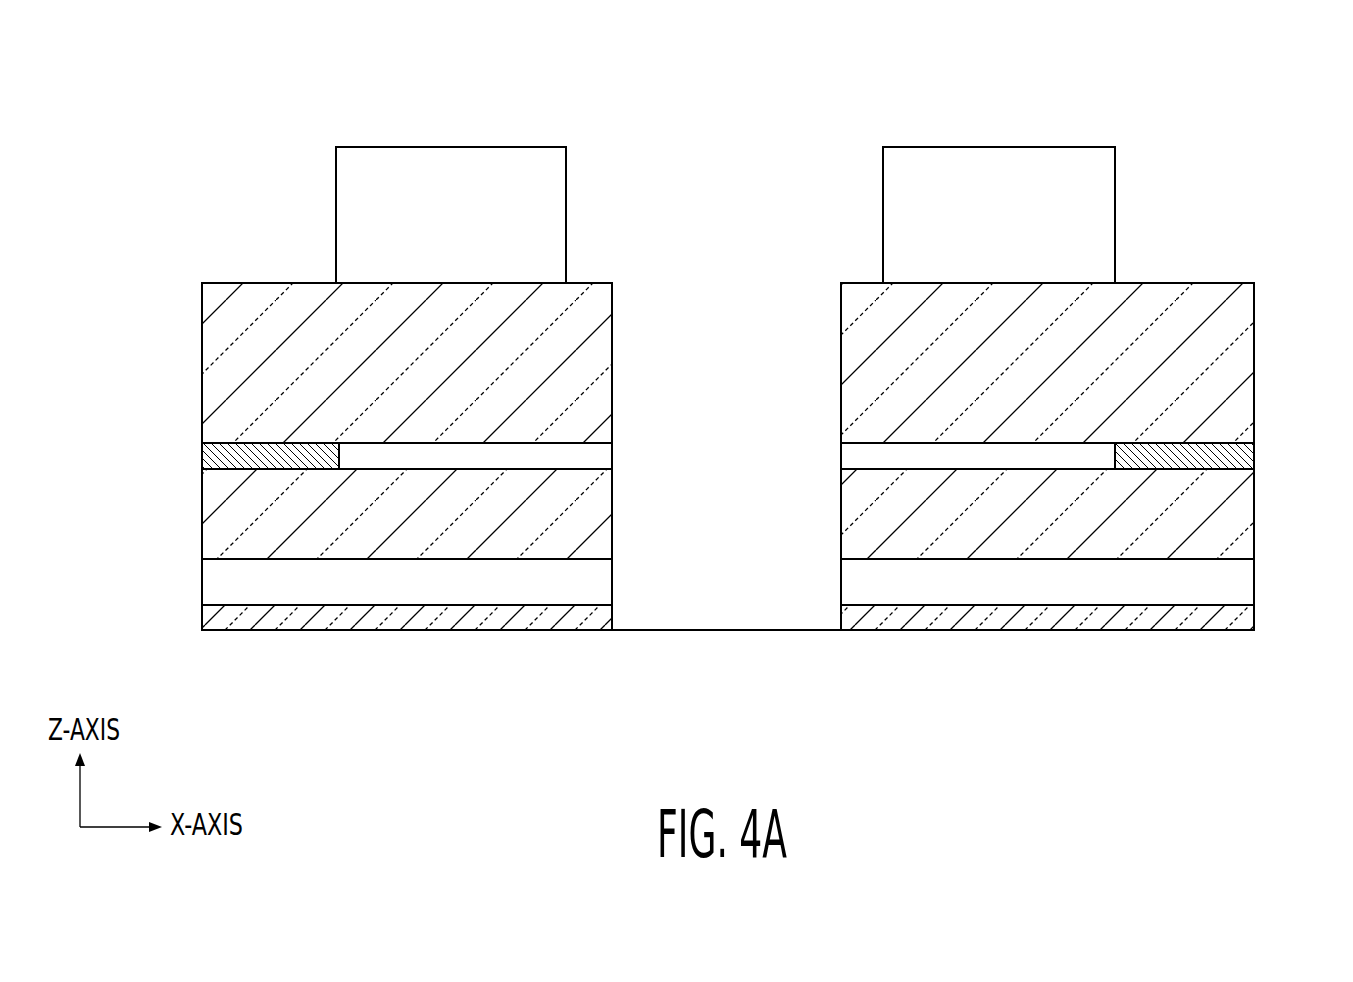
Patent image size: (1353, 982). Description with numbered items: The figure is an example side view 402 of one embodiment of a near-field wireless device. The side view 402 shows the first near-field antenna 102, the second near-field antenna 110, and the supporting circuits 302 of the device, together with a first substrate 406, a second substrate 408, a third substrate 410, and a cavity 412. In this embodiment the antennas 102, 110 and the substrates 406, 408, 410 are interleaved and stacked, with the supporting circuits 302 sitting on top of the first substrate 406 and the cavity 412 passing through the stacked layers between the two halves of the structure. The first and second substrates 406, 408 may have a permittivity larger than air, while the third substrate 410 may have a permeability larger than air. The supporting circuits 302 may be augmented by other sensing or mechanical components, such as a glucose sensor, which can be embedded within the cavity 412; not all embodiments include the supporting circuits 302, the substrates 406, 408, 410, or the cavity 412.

The side view 402 is at (168, 121).
The supporting circuits 302 is at (463, 147).
The first substrate 406 is at (202, 362).
The second near-field antenna 110 is at (202, 458).
The third substrate 410 is at (202, 512).
The second substrate 408 is at (202, 585).
The first near-field antenna 102 is at (202, 620).
The cavity 412 is at (748, 475).